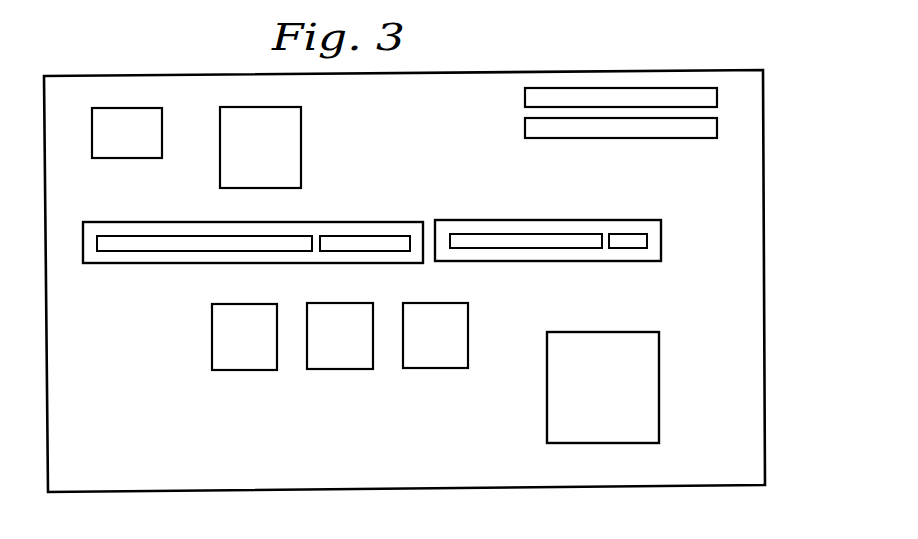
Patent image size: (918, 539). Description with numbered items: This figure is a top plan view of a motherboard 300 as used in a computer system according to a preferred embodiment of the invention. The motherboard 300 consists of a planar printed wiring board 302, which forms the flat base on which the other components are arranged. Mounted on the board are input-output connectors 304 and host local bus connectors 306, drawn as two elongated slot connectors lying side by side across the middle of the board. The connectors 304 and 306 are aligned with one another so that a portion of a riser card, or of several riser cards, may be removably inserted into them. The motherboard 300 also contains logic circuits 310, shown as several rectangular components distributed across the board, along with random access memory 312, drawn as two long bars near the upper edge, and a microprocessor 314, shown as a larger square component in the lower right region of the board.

The motherboard 300 is at (507, 58).
The planar printed wiring board 302 is at (752, 174).
The input-output connectors 304 is at (146, 222).
The host local bus connectors 306 is at (577, 220).
The logic circuits 310 is at (162, 115).
The random access memory 312 is at (524, 97).
The microprocessor 314 is at (650, 388).